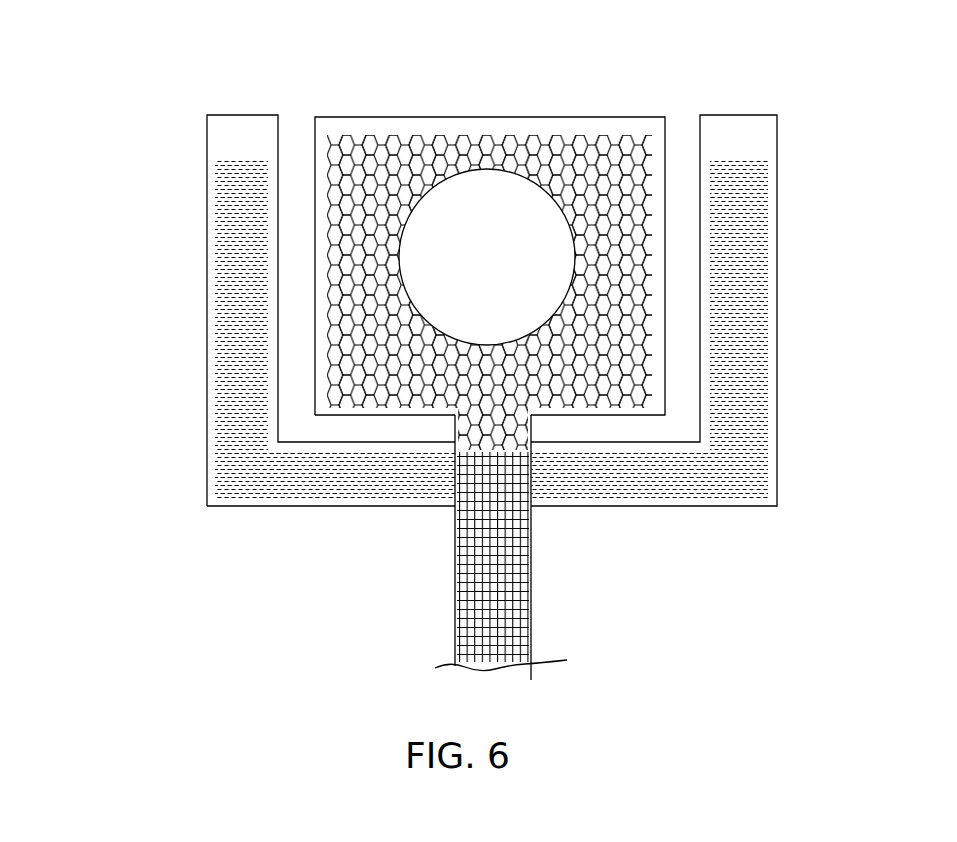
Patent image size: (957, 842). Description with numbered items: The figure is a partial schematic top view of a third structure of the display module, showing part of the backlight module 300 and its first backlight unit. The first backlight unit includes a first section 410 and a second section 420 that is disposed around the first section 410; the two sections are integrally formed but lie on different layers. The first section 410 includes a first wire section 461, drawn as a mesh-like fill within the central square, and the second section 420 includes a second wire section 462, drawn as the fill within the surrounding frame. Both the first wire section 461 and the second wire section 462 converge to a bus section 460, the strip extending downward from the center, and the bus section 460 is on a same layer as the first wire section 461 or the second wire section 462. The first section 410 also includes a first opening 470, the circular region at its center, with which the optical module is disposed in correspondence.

The backlight module 300 is at (150, 60).
The first section 410 is at (470, 132).
The second section 420 is at (233, 140).
The bus section 460 is at (486, 532).
The first wire section 461 is at (378, 176).
The second wire section 462 is at (246, 296).
The first opening 470 is at (518, 222).